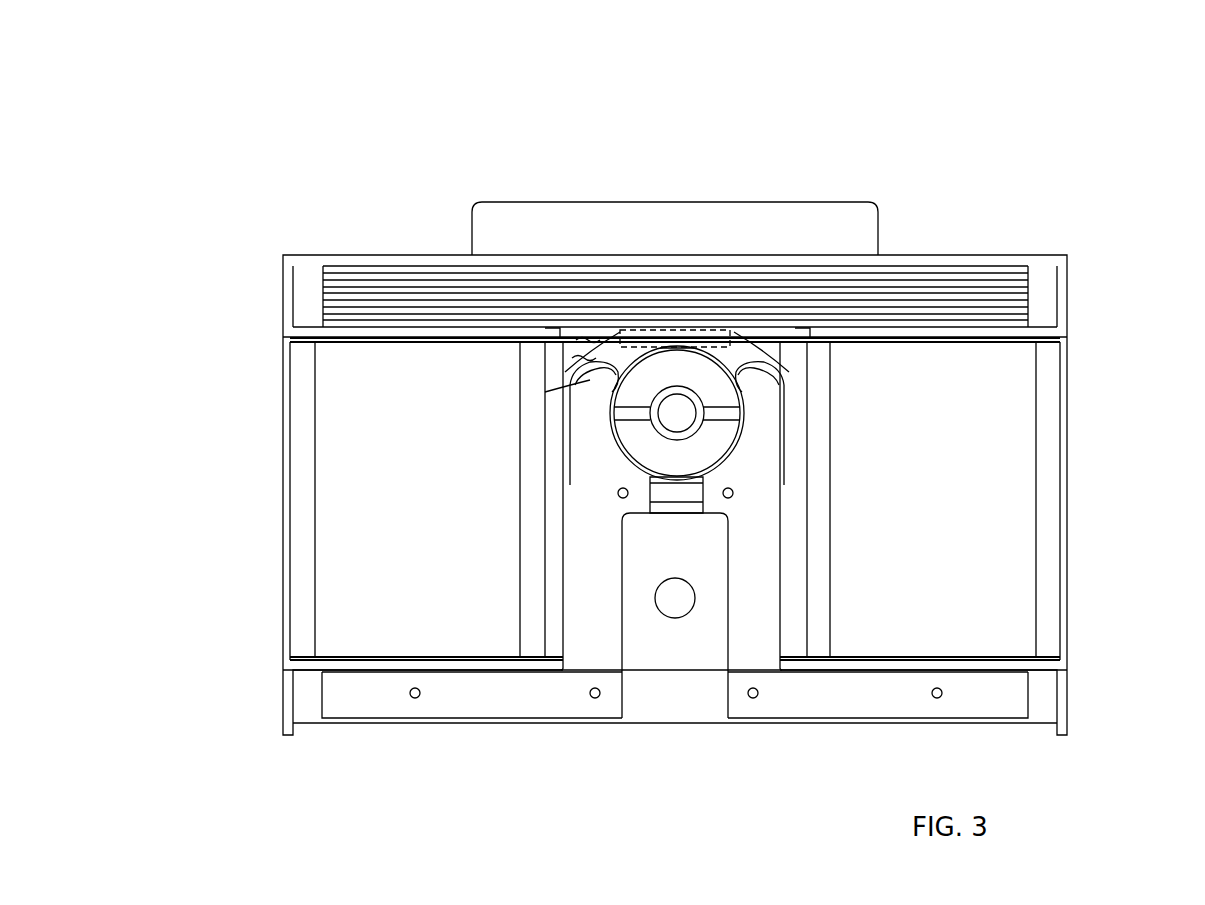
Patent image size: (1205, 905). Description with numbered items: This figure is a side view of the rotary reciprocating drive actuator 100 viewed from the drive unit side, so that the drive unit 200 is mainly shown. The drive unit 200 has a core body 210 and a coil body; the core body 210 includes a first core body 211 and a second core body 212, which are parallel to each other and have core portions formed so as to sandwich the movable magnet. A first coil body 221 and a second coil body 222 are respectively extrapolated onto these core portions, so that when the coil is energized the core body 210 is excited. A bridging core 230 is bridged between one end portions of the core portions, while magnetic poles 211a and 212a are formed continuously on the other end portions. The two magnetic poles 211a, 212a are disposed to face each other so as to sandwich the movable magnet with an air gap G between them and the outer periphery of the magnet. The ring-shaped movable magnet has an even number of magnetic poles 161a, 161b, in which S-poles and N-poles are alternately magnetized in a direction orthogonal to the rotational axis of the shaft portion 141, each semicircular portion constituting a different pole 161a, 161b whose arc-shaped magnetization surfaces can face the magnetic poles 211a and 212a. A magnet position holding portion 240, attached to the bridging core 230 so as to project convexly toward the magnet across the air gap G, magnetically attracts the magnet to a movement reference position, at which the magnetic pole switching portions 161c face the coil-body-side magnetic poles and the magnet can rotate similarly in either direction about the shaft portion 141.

The rotary reciprocating drive actuator 100 is at (704, 57).
The drive unit 200 is at (1028, 94).
The bridging core 230 is at (925, 278).
The magnet position holding portion 240 is at (645, 333).
The second coil body 222 is at (348, 483).
The first coil body 221 is at (1008, 484).
The core body 210 is at (836, 806).
The second core body 212 is at (557, 690).
The first core body 211 is at (833, 695).
The shaft portion 141 is at (683, 403).
The magnetic pole 161a is at (632, 393).
The magnetic pole 161b is at (628, 435).
The magnetic pole switching portion 161c is at (717, 415).
The air gap G is at (676, 347).
The magnetic pole 212a is at (580, 403).
The magnetic pole 211a is at (763, 410).